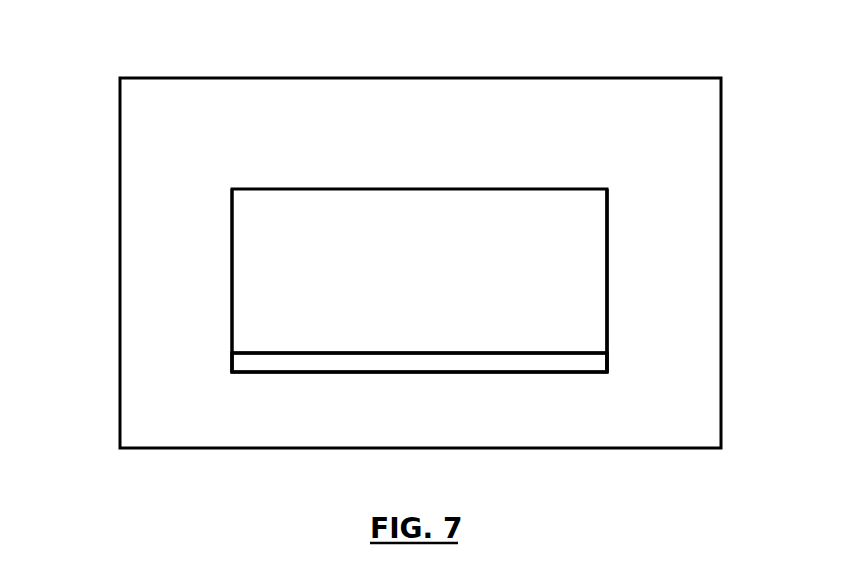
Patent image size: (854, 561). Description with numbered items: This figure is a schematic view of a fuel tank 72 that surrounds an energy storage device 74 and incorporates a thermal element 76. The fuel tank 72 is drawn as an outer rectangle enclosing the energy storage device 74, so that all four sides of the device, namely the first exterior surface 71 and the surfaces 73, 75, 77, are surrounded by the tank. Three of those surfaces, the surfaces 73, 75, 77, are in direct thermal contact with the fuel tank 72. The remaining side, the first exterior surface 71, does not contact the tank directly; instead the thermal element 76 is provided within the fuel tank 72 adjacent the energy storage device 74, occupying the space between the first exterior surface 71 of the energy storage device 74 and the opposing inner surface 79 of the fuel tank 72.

The first exterior surface 71 is at (313, 365).
The fuel tank 72 is at (119, 243).
The side surface 73 is at (222, 305).
The energy storage device 74 is at (607, 228).
The side surface 75 is at (351, 180).
The thermal element 76 is at (583, 365).
The side surface 77 is at (617, 292).
The inner surface 79 is at (268, 360).